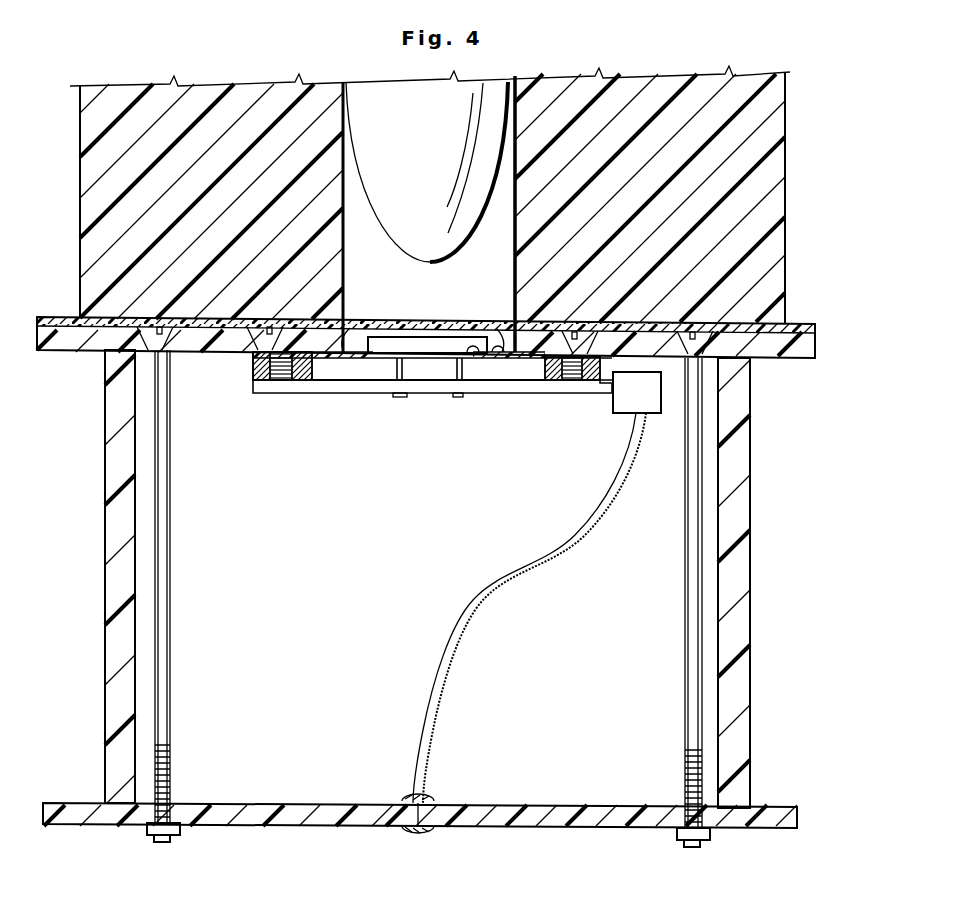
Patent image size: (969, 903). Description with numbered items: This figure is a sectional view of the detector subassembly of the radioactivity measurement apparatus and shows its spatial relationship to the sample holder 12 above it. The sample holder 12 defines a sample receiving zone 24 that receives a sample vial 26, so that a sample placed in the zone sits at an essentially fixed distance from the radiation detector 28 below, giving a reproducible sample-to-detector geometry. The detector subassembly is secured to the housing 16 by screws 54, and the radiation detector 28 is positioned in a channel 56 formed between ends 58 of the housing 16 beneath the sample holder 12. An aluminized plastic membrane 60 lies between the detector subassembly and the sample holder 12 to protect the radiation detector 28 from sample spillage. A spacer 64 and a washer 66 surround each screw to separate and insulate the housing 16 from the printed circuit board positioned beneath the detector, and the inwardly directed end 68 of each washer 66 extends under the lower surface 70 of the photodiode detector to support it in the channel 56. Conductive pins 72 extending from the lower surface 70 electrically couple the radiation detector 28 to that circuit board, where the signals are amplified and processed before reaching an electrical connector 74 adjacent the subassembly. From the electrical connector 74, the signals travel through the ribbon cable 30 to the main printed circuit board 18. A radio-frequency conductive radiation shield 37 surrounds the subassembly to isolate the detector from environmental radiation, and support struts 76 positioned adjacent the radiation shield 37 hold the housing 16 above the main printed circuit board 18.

The sample holder 12 is at (217, 158).
The sample vial 26 is at (422, 116).
The sample receiving zone 24 is at (505, 243).
The housing 16 is at (812, 341).
The screws 54 is at (298, 333).
The ends of the housing 58 is at (344, 346).
The channel 56 is at (503, 340).
The aluminized plastic membrane 60 is at (547, 350).
The radiation detector 28 is at (417, 346).
The spacer 64 is at (245, 374).
The washer 66 is at (315, 380).
The conductive pins 72 is at (390, 368).
The lower surface of the photodiode detector 70 is at (473, 354).
The inwardly directed end of washer 68 is at (501, 354).
The electrical connector 74 is at (613, 417).
The ribbon cable 30 is at (440, 719).
The radiation shield 37 is at (754, 582).
The support struts 76 is at (173, 543).
The main printed circuit board 18 is at (553, 829).